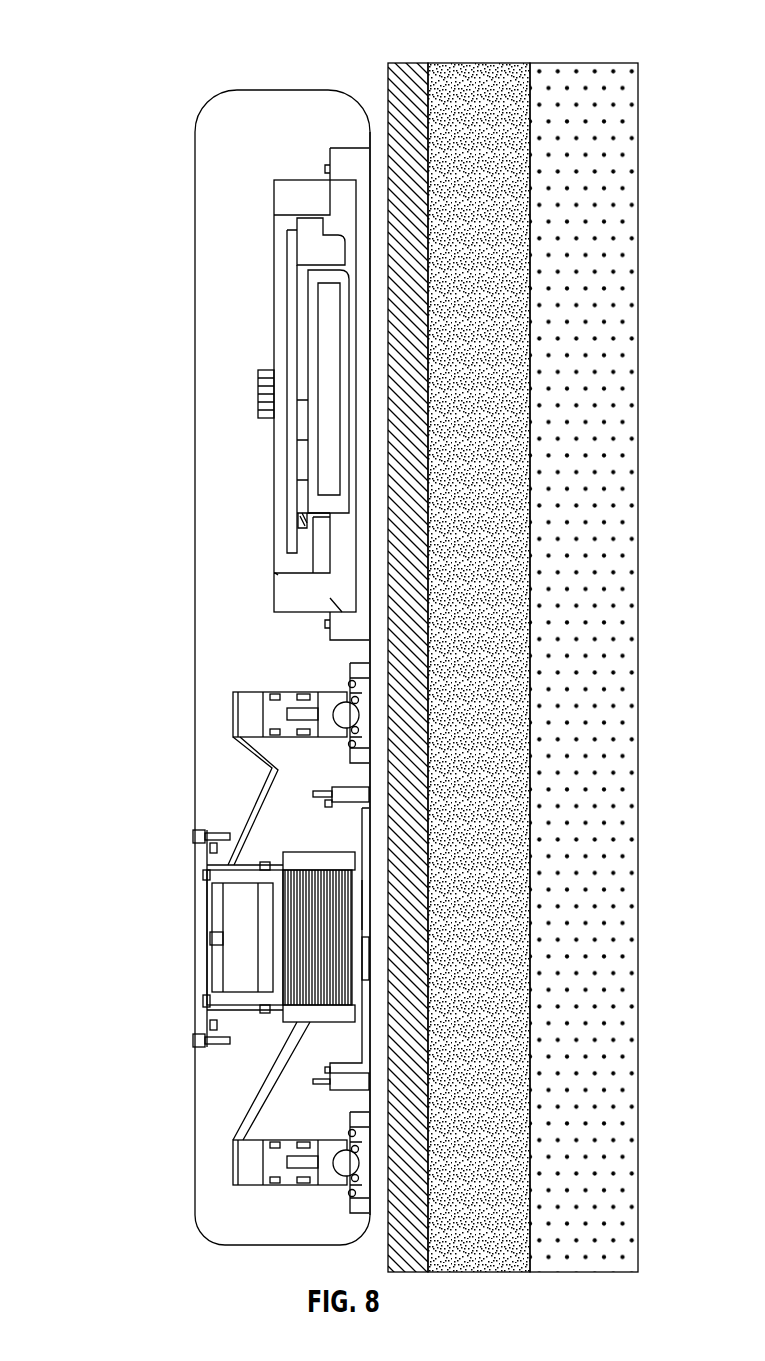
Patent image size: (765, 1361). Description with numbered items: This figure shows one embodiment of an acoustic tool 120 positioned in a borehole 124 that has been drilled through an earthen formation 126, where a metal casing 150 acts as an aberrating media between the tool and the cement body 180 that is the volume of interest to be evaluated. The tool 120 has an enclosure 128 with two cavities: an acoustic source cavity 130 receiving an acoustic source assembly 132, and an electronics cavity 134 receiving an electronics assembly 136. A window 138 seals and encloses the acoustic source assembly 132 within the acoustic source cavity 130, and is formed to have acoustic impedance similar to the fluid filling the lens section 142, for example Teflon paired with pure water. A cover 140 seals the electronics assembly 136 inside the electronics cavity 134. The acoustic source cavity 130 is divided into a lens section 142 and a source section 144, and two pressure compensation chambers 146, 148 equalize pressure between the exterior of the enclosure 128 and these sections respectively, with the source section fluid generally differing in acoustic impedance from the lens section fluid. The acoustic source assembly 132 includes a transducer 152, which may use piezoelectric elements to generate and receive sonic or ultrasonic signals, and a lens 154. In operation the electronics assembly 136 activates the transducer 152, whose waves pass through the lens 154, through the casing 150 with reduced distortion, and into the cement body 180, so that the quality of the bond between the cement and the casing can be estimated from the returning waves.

The acoustic tool 120 is at (121, 67).
The borehole 124 is at (377, 103).
The earthen formation 126 is at (348, 83).
The enclosure 128 is at (215, 334).
The acoustic source cavity 130 is at (338, 862).
The acoustic source assembly 132 is at (368, 900).
The electronics cavity 134 is at (328, 217).
The electronics assembly 136 is at (368, 282).
The window 138 is at (363, 980).
The cover 140 is at (362, 560).
The lens section 142 is at (317, 1020).
The source section 144 is at (205, 972).
The pressure compensation chamber 146 is at (328, 1150).
The pressure compensation chamber 148 is at (247, 710).
The casing 150 is at (408, 63).
The transducer 152 is at (265, 925).
The lens 154 is at (340, 953).
The cement body 180 is at (478, 63).